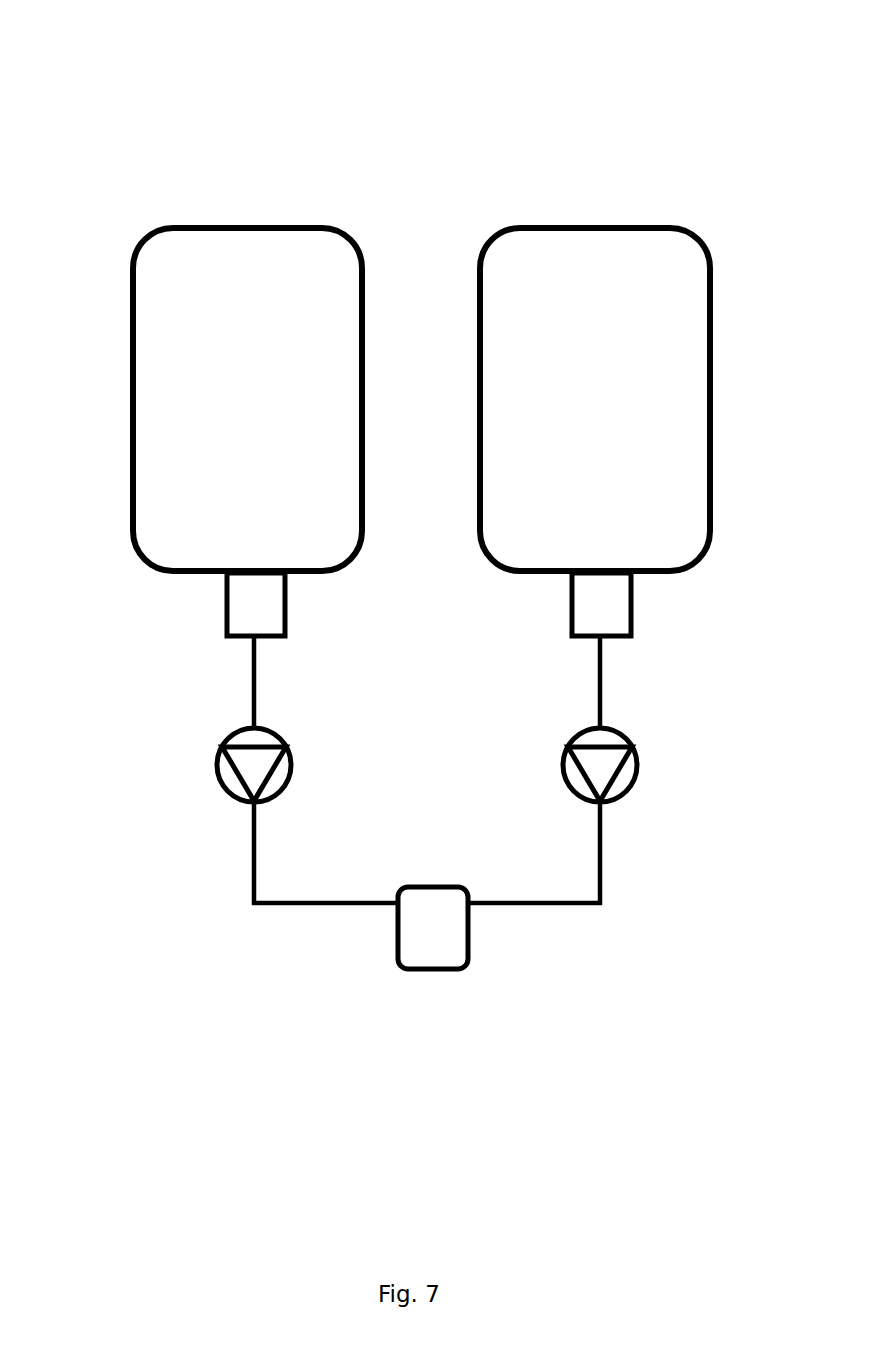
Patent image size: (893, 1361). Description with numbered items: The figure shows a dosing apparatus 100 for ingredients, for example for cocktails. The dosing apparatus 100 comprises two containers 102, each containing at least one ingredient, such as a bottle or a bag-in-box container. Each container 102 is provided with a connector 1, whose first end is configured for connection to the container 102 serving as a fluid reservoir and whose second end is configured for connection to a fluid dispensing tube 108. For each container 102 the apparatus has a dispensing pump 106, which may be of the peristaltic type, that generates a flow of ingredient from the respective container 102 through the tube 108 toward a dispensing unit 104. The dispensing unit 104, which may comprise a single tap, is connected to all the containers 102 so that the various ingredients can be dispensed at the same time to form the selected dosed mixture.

The dosing apparatus 100 is at (96, 106).
The container 102 is at (232, 263).
The connector 1 is at (245, 600).
The fluid dispensing tube 108 is at (253, 675).
The dispensing pump 106 is at (220, 783).
The dispensing unit 104 is at (435, 943).